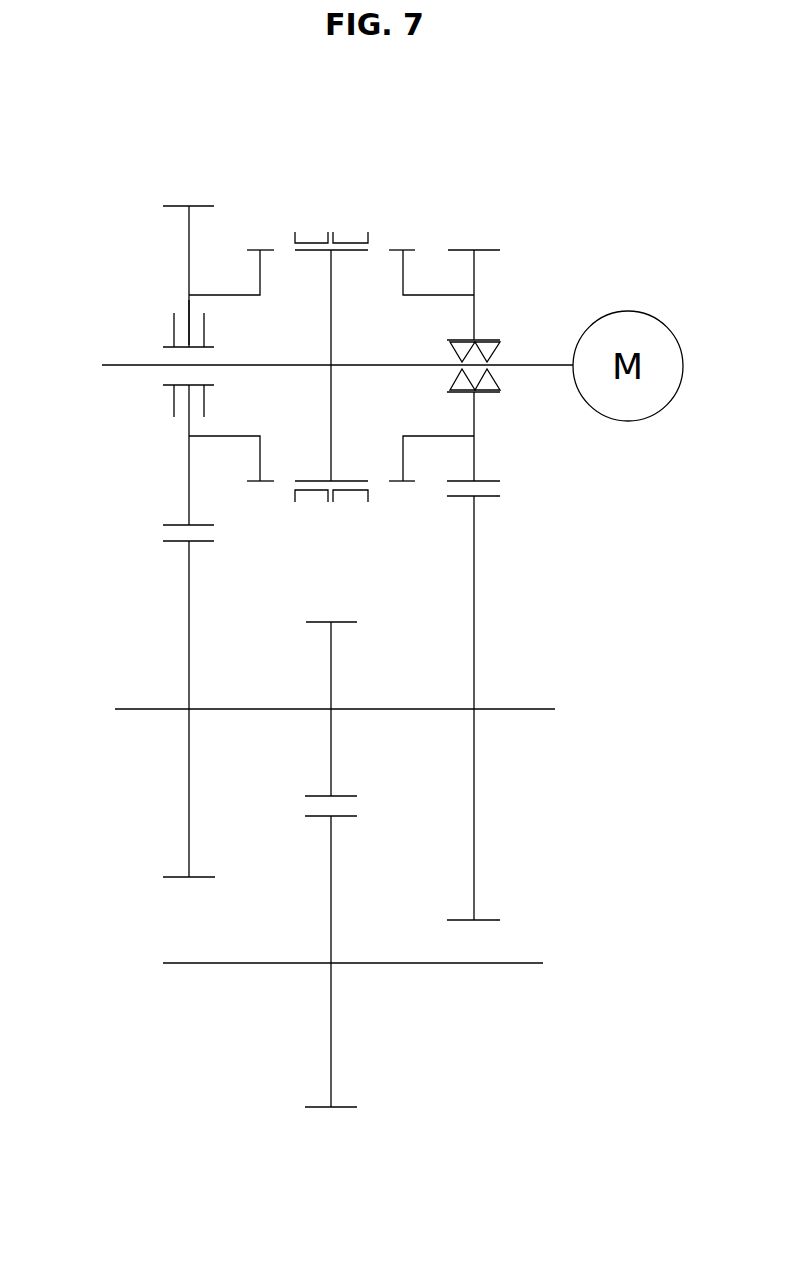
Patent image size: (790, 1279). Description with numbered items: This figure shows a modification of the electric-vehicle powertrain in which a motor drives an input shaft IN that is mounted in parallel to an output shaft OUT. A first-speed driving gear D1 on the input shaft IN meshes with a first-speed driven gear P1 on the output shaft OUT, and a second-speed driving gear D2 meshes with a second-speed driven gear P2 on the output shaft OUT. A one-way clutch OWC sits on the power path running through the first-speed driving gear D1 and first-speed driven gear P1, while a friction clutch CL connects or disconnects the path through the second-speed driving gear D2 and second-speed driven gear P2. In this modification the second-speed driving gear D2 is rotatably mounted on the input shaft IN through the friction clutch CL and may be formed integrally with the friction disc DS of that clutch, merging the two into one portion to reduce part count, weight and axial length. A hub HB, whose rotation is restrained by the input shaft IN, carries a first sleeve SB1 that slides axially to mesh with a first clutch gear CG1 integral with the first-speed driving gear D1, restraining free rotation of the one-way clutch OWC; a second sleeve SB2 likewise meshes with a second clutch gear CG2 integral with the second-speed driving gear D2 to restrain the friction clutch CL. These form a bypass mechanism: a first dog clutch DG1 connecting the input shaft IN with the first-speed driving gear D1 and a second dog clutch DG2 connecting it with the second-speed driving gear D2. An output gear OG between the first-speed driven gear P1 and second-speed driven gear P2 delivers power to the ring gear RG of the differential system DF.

The input shaft IN is at (133, 367).
The output shaft OUT is at (132, 707).
The first-speed driving gear D1 is at (490, 248).
The second-speed driving gear D2 is at (175, 205).
The friction disc DS is at (189, 328).
The friction clutch CL is at (174, 337).
The first clutch gear CG1 is at (431, 322).
The second clutch gear CG2 is at (248, 248).
The first sleeve SB1 is at (350, 243).
The second sleeve SB2 is at (310, 243).
The hub HB is at (332, 315).
The first dog clutch DG1 is at (403, 290).
The second dog clutch DG2 is at (267, 293).
The one-way clutch OWC is at (498, 350).
The output gear OG is at (320, 620).
The first-speed driven gear P1 is at (490, 918).
The second-speed driven gear P2 is at (170, 875).
The ring gear RG is at (310, 1105).
The differential system DF is at (353, 963).